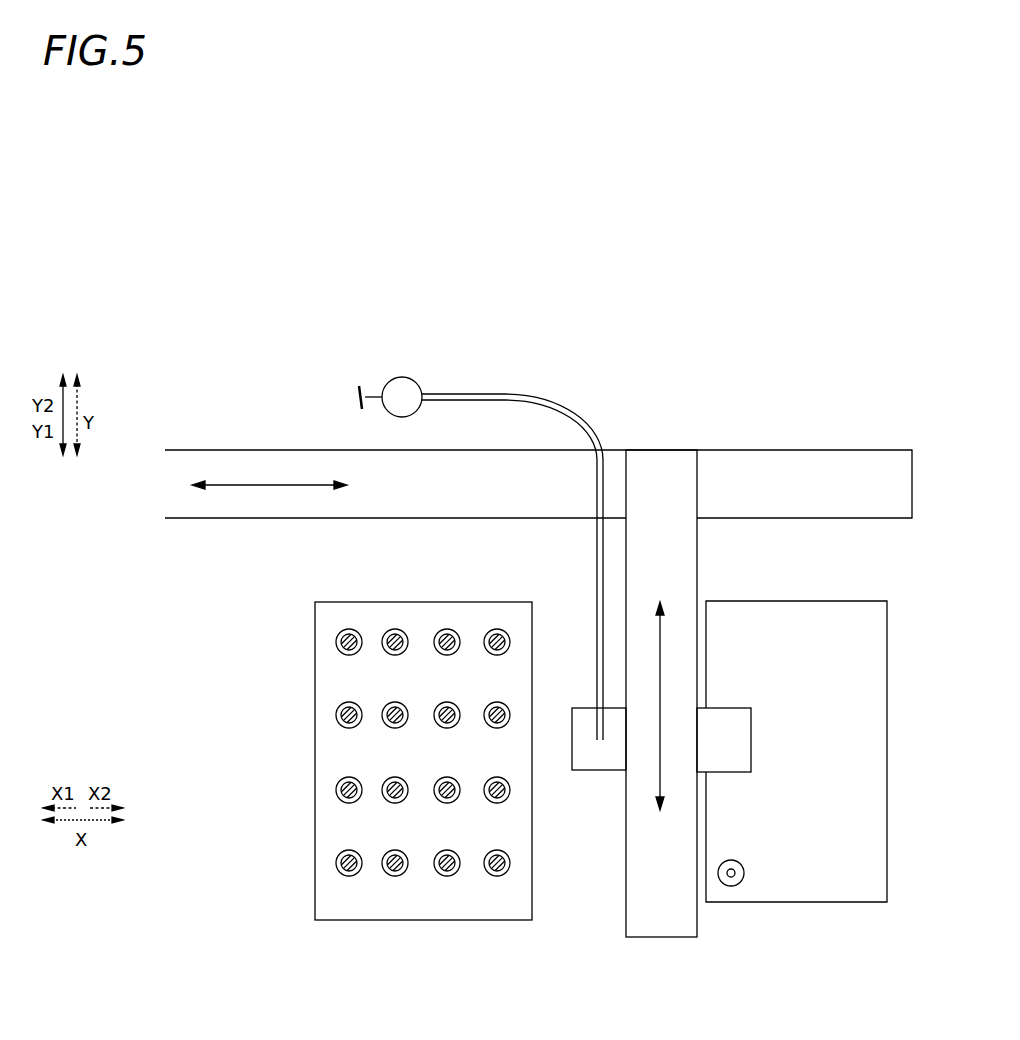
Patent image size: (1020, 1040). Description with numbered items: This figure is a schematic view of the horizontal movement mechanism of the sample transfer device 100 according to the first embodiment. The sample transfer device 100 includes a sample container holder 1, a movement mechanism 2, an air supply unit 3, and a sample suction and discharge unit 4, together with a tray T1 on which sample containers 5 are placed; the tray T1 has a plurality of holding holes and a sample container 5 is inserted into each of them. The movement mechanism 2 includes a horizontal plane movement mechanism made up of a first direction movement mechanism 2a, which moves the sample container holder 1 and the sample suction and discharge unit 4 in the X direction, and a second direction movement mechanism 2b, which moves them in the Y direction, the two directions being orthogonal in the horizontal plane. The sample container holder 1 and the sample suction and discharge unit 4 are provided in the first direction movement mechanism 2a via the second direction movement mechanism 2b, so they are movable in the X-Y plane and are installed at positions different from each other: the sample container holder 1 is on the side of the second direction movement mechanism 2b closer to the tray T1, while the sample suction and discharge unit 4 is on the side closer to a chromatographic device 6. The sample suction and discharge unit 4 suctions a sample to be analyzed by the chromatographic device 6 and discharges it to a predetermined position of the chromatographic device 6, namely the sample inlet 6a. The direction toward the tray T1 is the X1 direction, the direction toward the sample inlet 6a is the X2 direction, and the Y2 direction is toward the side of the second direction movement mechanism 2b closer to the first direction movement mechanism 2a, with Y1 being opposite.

The sample transfer device 100 is at (538, 653).
The sample container holder 1 is at (590, 772).
The movement mechanism 2 is at (538, 667).
The first direction movement mechanism 2a is at (830, 449).
The second direction movement mechanism 2b is at (699, 549).
The air supply unit 3 is at (402, 377).
The sample suction and discharge unit 4 is at (752, 740).
The sample container 5 is at (511, 863).
The chromatographic device 6 is at (850, 601).
The sample inlet 6a is at (741, 862).
The tray T1 is at (454, 804).